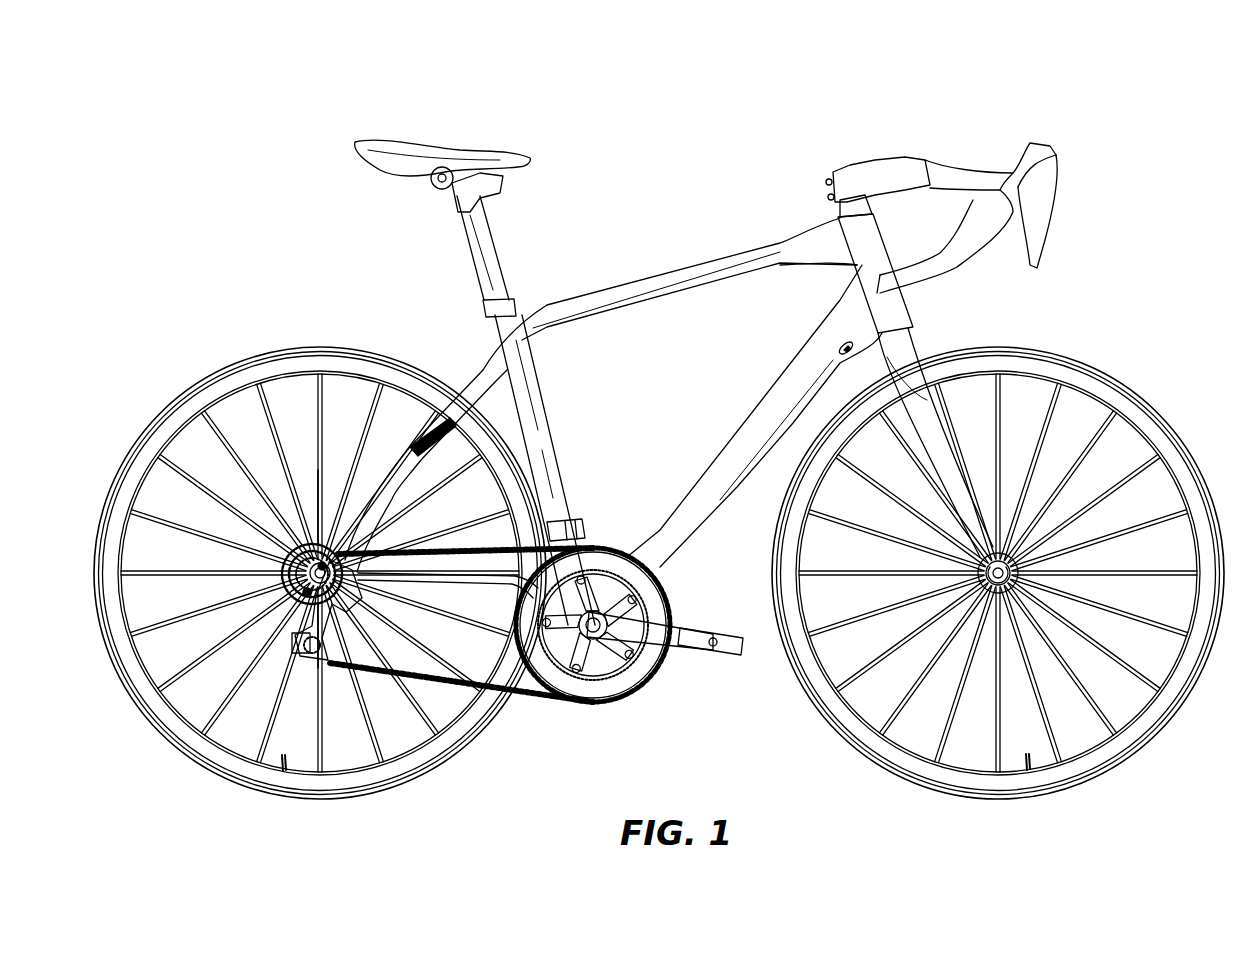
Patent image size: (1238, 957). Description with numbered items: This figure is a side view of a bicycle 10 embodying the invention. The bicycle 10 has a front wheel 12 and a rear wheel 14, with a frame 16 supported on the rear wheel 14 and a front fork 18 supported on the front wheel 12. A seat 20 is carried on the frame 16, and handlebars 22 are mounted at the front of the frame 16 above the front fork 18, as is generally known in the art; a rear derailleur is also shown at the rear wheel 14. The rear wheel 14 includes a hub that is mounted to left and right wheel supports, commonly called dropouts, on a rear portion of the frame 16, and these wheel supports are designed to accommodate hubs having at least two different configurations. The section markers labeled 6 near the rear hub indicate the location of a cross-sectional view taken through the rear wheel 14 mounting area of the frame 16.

The bicycle 10 is at (662, 167).
The front wheel 12 is at (1085, 378).
The rear wheel 14 is at (210, 382).
The frame 16 is at (540, 393).
The front fork 18 is at (920, 383).
The seat 20 is at (383, 140).
The handlebars 22 is at (939, 177).
The rear derailleur section 6 is at (308, 523).